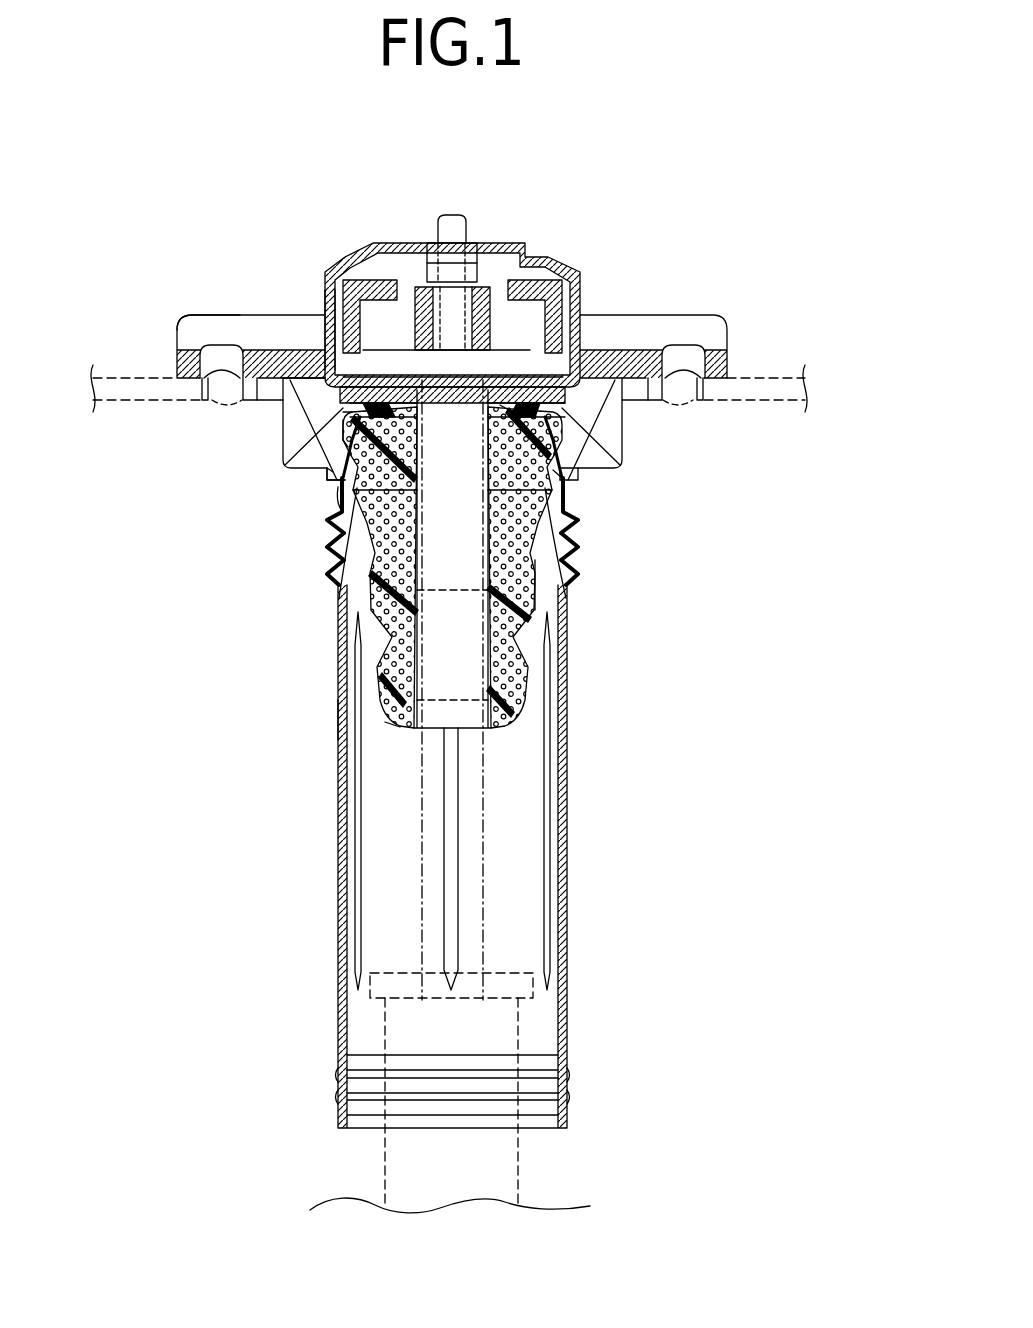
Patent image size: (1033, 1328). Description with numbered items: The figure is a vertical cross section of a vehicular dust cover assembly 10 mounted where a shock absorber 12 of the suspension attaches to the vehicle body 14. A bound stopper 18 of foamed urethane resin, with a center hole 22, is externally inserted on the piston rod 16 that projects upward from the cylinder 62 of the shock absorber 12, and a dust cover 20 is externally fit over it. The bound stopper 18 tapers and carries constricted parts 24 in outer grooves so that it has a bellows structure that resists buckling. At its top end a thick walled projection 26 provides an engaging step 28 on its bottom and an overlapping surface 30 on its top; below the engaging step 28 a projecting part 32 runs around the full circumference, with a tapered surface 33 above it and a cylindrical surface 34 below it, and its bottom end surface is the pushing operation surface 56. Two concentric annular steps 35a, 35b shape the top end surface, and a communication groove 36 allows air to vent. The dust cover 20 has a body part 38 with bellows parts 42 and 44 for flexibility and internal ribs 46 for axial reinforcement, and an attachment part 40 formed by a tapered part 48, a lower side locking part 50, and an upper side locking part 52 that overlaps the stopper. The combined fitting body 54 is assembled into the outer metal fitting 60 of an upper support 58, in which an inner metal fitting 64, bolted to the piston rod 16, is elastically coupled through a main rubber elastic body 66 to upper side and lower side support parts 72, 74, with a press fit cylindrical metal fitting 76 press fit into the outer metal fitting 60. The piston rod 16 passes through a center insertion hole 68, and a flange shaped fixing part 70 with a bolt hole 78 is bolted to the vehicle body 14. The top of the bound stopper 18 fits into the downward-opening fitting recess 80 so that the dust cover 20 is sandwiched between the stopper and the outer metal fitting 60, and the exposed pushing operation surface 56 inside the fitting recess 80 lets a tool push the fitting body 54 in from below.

The vehicular dust cover assembly 10 is at (668, 150).
The shock absorber 12 is at (262, 902).
The vehicle body 14 is at (747, 388).
The piston rod 16 is at (357, 902).
The bound stopper 18 is at (382, 727).
The dust cover 20 is at (588, 740).
The center hole 22 is at (487, 668).
The constricted parts 24 is at (385, 547).
The thick walled projection 26 is at (573, 424).
The engaging step 28 is at (550, 460).
The overlapping surface 30 is at (550, 410).
The projecting part 32 is at (340, 508).
The tapered surface 33 is at (558, 480).
The cylindrical surface 34 is at (338, 487).
The annular step 35a is at (512, 410).
The annular step 35b is at (520, 413).
The communication groove 36 is at (488, 395).
The body part 38 is at (325, 718).
The attachment part 40 is at (205, 405).
The bellows part 42 is at (590, 553).
The bellows part 44 is at (578, 1085).
The ribs 46 is at (358, 838).
The tapered part 48 is at (332, 470).
The lower side locking part 50 is at (348, 445).
The upper side locking part 52 is at (343, 414).
The fitting body 54 is at (343, 402).
The pushing operation surface 56 is at (560, 582).
The upper support 58 is at (346, 218).
The outer metal fitting 60 is at (722, 316).
The cylinder 62 is at (400, 1033).
The inner metal fitting 64 is at (512, 337).
The main rubber elastic body 66 is at (530, 297).
The center insertion hole 68 is at (417, 394).
The fixing part 70 is at (198, 323).
The upper side support part 72 is at (365, 253).
The lower side support part 74 is at (500, 397).
The press fit cylindrical metal fitting 76 is at (332, 297).
The bolt hole 78 is at (241, 362).
The fitting recess 80 is at (388, 385).